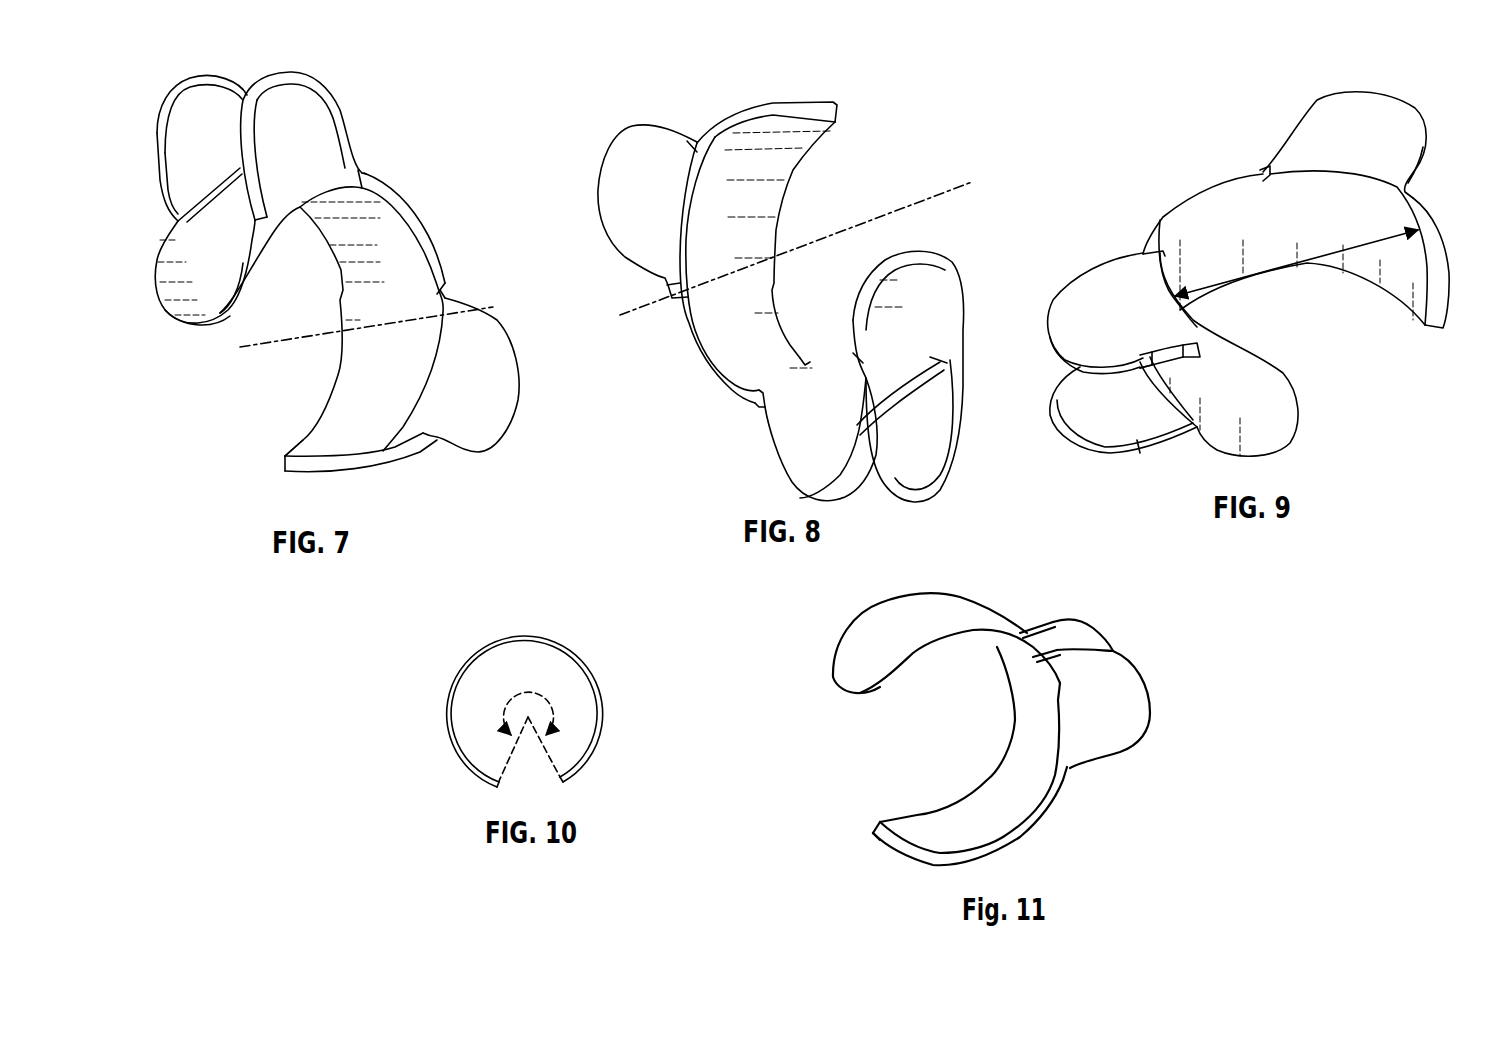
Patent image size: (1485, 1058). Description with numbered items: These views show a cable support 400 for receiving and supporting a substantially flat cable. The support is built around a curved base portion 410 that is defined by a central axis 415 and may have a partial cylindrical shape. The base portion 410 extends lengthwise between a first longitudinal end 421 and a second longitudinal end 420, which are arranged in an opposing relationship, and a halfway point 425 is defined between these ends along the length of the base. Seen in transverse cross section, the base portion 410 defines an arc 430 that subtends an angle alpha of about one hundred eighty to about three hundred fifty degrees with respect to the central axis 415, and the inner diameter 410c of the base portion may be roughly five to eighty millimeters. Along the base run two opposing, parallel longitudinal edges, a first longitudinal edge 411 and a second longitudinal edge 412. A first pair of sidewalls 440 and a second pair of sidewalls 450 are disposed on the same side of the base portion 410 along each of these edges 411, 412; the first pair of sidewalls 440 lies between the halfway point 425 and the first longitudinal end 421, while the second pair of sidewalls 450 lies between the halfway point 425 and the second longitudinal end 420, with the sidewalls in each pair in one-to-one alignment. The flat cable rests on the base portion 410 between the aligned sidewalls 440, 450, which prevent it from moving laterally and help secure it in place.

In FIG. 7, the cable support 400 is at (374, 68).
In FIG. 8, the cable support 400 is at (901, 108).
In FIG. 9, the cable support 400 is at (1396, 76).
In FIG. 11, the cable support 400 is at (1049, 577).
In FIG. 7, the curved base portion 410 is at (434, 270).
In FIG. 11, the curved base portion 410 is at (1043, 800).
In FIG. 9, the inner diameter 410c is at (1363, 243).
In FIG. 7, the first longitudinal edge 411 is at (385, 453).
In FIG. 11, the first longitudinal edge 411 is at (917, 864).
In FIG. 7, the second longitudinal edge 412 is at (305, 440).
In FIG. 11, the second longitudinal edge 412 is at (917, 814).
In FIG. 7, the central axis 415 is at (343, 330).
In FIG. 8, the central axis 415 is at (888, 215).
In FIG. 10, the central axis 415 is at (528, 717).
In FIG. 7, the second longitudinal end 420 is at (290, 466).
In FIG. 8, the second longitudinal end 420 is at (854, 410).
In FIG. 10, the second longitudinal end 420 is at (584, 777).
In FIG. 7, the first longitudinal end 421 is at (180, 318).
In FIG. 10, the first longitudinal end 421 is at (495, 783).
In FIG. 7, the halfway point 425 is at (407, 213).
In FIG. 11, the halfway point 425 is at (1020, 724).
In FIG. 10, the arc 430 is at (596, 673).
In FIG. 7, the first pair of sidewalls 440 is at (190, 57).
In FIG. 8, the first pair of sidewalls 440 is at (908, 376).
In FIG. 11, the first pair of sidewalls 440 is at (1124, 638).
In FIG. 7, the second pair of sidewalls 450 is at (534, 424).